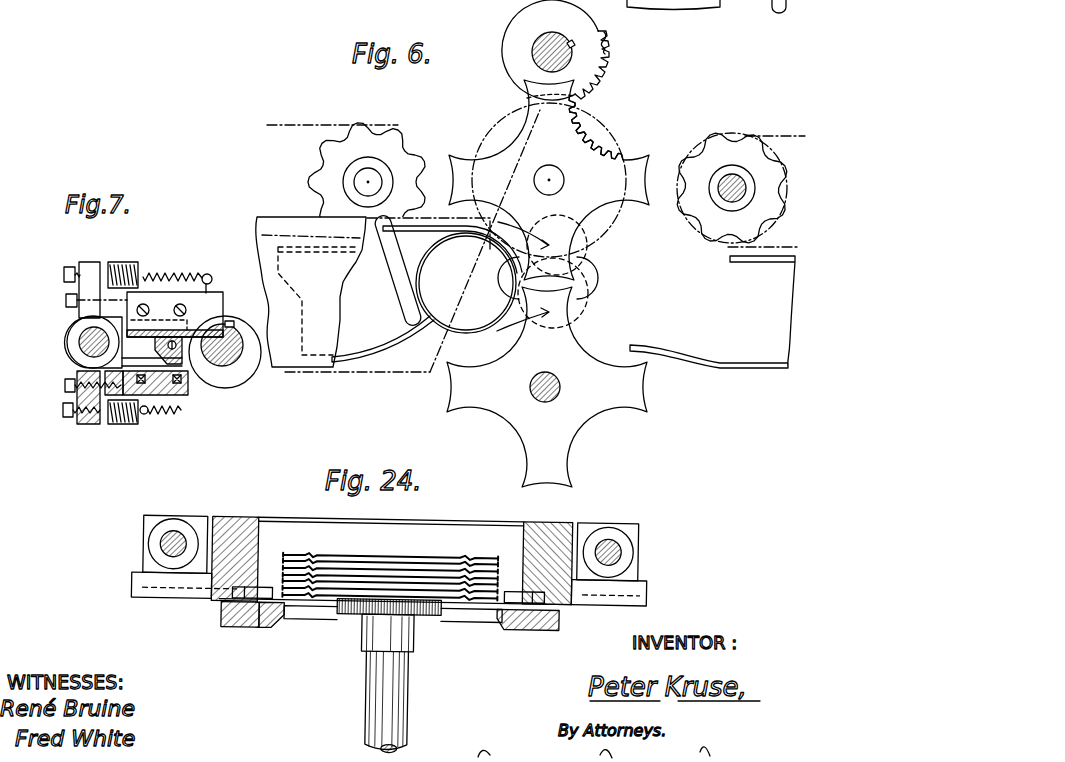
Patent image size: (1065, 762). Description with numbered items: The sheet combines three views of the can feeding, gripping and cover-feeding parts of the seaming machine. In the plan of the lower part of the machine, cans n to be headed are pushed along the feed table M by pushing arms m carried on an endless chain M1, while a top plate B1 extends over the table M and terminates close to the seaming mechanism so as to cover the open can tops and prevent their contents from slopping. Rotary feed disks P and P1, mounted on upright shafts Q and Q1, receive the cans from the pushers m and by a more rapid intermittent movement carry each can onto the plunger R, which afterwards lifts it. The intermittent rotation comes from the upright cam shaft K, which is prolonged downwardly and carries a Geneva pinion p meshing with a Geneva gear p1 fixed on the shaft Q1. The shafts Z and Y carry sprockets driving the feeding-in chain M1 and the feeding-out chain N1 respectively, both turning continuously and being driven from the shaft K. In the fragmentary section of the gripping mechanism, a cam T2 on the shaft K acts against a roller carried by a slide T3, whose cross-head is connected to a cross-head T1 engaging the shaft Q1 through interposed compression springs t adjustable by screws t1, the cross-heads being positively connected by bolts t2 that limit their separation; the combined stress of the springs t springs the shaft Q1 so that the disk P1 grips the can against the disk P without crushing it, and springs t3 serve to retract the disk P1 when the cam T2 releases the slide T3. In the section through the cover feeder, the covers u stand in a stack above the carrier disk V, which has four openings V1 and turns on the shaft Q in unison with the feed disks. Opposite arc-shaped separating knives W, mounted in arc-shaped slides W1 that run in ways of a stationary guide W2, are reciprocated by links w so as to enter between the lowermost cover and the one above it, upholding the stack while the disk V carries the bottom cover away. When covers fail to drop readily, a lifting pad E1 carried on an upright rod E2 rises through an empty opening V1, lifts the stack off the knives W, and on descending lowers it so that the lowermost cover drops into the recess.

In FIG. 6, the upright cam shaft K is at (538, 41).
In FIG. 7, the upright cam shaft K is at (252, 318).
In FIG. 6, the Geneva pinion p is at (602, 76).
In FIG. 6, the Geneva gear p1 is at (619, 153).
In FIG. 6, the endless chain M1 is at (298, 127).
In FIG. 6, the shaft Z is at (366, 173).
In FIG. 6, the pushing arms m is at (389, 279).
In FIG. 6, the cans to be headed n is at (367, 307).
In FIG. 6, the feed table M is at (392, 295).
In FIG. 6, the top plate B1 is at (292, 371).
In FIG. 6, the upright shaft Q1 is at (548, 180).
In FIG. 7, the upright shaft Q1 is at (86, 342).
In FIG. 6, the rotary feeding disk P1 is at (549, 180).
In FIG. 6, the endless chain N1 is at (784, 136).
In FIG. 6, the upright shaft Y is at (733, 184).
In FIG. 6, the plunger R is at (596, 284).
In FIG. 6, the upright shaft Q is at (558, 392).
In FIG. 6, the rotary feeding disk P is at (547, 387).
In FIG. 7, the screws t1 is at (64, 272).
In FIG. 7, the compression springs t is at (126, 262).
In FIG. 7, the springs t3 is at (181, 274).
In FIG. 7, the screw rods or bolts t2 is at (66, 300).
In FIG. 7, the cross-head T1 is at (72, 331).
In FIG. 7, the cam T2 is at (240, 388).
In FIG. 7, the slide T3 is at (170, 414).
In FIG. 24, the links w is at (162, 546).
In FIG. 24, the stationary guide W2 is at (238, 521).
In FIG. 24, the arc-shaped slides W1 is at (238, 586).
In FIG. 24, the can covers u is at (398, 557).
In FIG. 24, the carrier disk V is at (225, 624).
In FIG. 24, the separating knives W is at (268, 624).
In FIG. 24, the openings V1 is at (305, 616).
In FIG. 24, the lifting pad E1 is at (362, 610).
In FIG. 24, the upright rod E2 is at (410, 703).